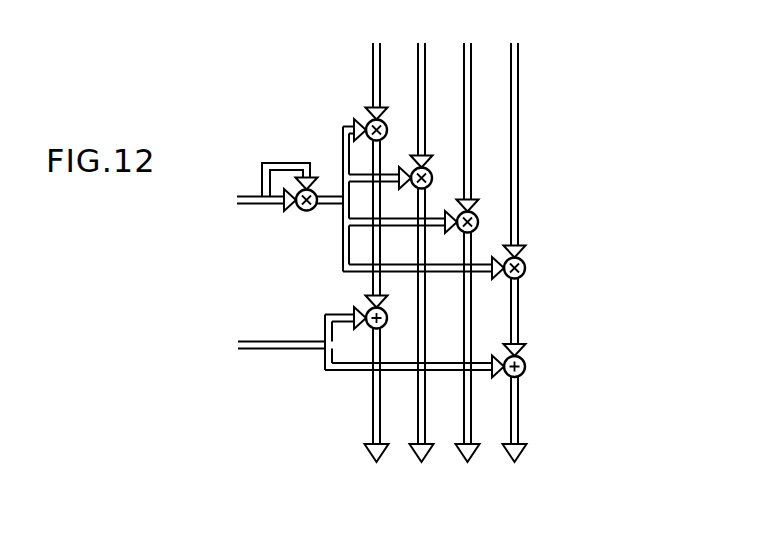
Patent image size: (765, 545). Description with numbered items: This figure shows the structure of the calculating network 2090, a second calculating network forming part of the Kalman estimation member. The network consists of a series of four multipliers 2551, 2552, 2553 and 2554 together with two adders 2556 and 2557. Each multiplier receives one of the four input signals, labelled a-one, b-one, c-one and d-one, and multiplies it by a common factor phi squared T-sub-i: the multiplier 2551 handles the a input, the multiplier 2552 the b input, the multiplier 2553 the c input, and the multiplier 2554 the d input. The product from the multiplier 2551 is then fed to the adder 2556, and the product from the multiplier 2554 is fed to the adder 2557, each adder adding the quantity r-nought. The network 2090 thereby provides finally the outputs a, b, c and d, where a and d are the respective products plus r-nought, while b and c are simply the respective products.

The multiplier 2551 is at (367, 120).
The multiplier 2552 is at (433, 176).
The multiplier 2553 is at (479, 220).
The multiplier 2554 is at (526, 270).
The adder 2556 is at (367, 309).
The adder 2557 is at (526, 367).
The calculating network 2090 is at (422, 253).